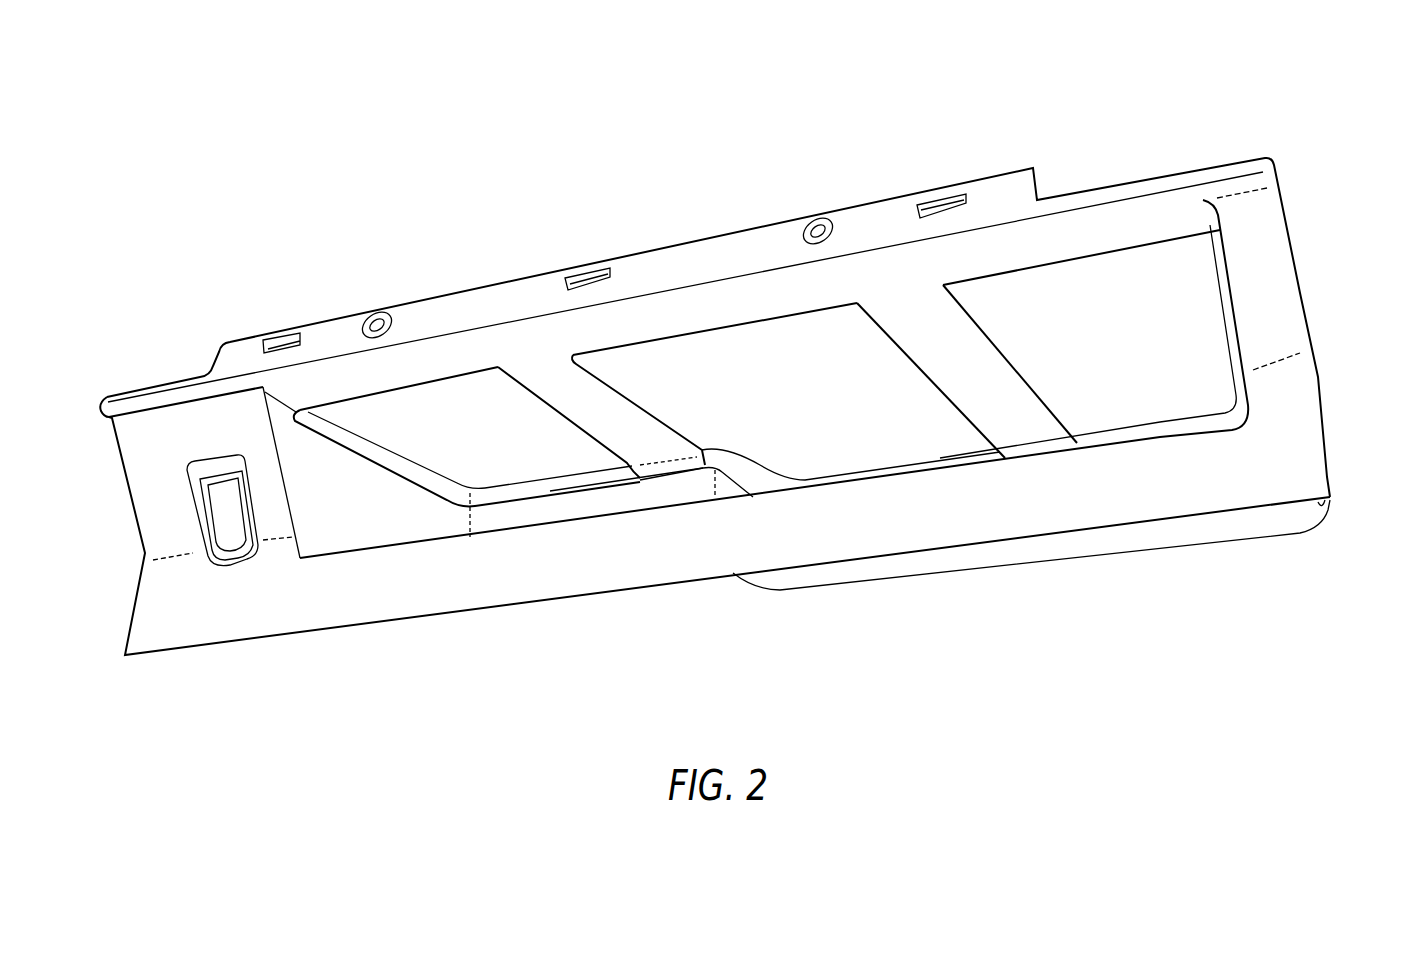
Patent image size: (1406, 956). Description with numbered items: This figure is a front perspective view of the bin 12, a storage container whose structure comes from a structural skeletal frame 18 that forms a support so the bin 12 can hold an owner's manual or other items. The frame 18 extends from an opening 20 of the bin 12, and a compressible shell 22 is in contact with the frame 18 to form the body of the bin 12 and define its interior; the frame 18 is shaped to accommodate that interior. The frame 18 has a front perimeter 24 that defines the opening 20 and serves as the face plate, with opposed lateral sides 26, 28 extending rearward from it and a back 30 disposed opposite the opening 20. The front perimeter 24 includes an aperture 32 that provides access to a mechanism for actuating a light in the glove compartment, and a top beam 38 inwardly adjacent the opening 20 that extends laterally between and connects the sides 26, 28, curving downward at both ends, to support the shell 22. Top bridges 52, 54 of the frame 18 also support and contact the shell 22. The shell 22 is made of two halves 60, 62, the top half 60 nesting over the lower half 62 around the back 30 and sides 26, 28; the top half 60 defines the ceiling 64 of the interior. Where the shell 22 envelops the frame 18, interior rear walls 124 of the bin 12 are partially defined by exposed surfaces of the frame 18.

The bin 12 is at (290, 145).
The structural skeletal frame 18 is at (703, 303).
The opening 20 is at (794, 403).
The compressible shell 22 is at (817, 332).
The front perimeter 24 is at (422, 297).
The lateral side 26 is at (358, 523).
The lateral side 28 is at (1325, 505).
The back 30 is at (617, 500).
The aperture 32 is at (232, 510).
The top beam 38 is at (590, 328).
The top bridge 52 is at (927, 317).
The top bridge 54 is at (543, 378).
The half 60 is at (1203, 288).
The half 62 is at (1110, 557).
The ceiling 64 is at (1167, 273).
The interior rear walls 124 is at (677, 490).